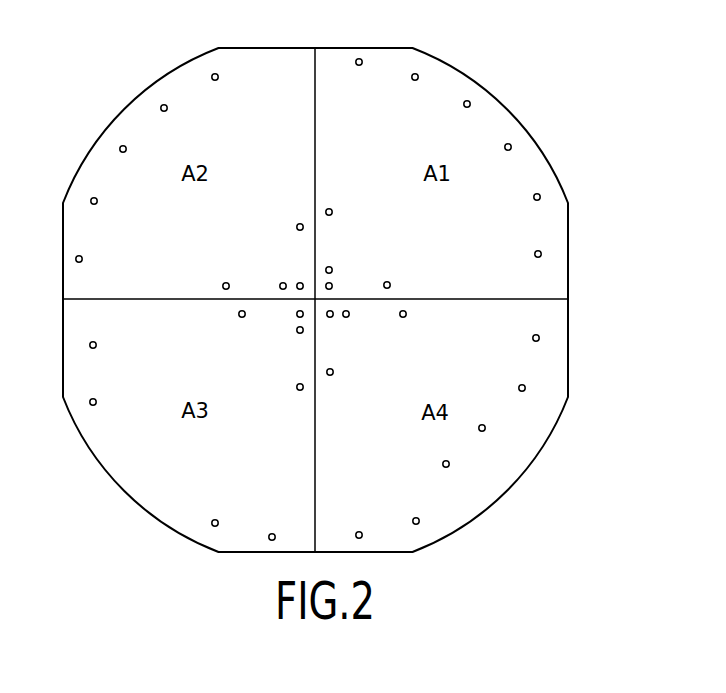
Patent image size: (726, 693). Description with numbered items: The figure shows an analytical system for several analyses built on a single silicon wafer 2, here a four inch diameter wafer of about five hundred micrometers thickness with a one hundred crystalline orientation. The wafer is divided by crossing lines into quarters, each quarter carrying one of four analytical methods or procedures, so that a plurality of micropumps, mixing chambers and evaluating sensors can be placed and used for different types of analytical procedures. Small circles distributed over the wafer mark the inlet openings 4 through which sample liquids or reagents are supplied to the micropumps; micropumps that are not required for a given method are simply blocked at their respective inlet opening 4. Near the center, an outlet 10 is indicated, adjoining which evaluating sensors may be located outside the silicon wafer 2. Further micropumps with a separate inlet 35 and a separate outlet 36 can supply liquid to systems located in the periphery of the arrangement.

The silicon wafer 2 is at (560, 273).
The inlet opening 4 is at (362, 59).
The outlet 10 is at (391, 283).
The separate inlet 35 is at (332, 266).
The separate outlet 36 is at (327, 207).